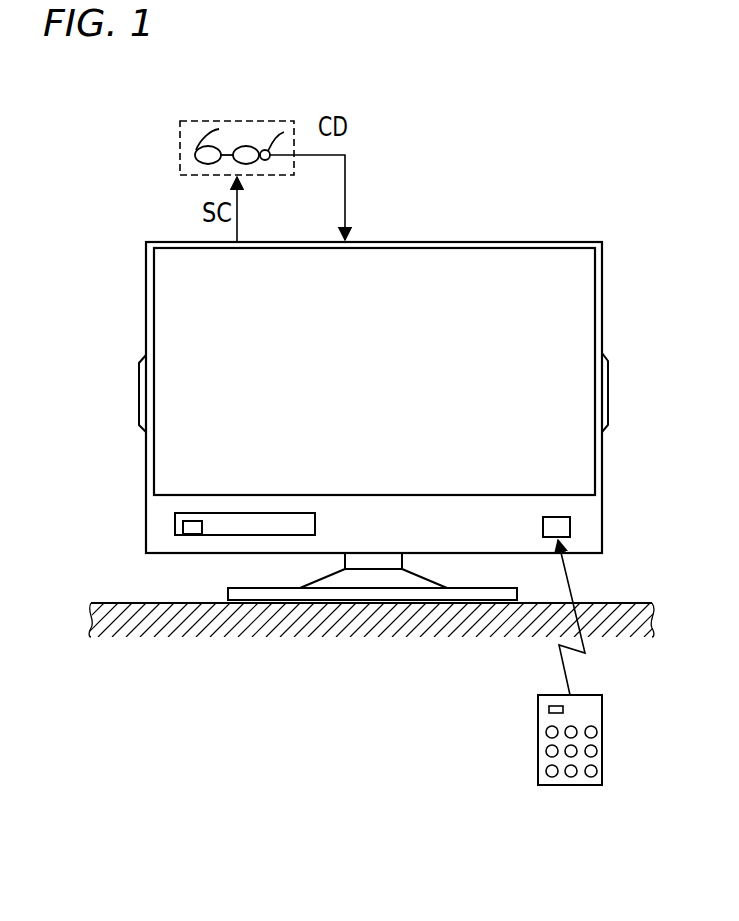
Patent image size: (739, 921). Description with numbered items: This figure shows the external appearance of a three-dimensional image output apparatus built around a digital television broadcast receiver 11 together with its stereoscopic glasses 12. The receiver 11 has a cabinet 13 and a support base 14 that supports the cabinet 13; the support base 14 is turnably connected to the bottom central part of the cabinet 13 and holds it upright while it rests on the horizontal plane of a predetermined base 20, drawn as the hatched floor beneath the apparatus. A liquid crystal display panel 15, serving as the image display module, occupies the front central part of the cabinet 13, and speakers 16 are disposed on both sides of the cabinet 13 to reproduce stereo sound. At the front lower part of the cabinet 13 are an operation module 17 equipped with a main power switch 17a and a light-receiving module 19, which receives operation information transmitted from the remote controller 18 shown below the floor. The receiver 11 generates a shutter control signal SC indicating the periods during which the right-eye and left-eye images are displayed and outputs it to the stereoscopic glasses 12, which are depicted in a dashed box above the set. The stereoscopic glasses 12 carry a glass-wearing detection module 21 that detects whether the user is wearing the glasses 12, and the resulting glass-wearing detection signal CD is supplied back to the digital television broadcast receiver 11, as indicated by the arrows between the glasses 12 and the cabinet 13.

The digital television broadcast receiver 11 is at (570, 240).
The stereoscopic glasses 12 is at (226, 121).
The cabinet 13 is at (602, 297).
The support base 14 is at (477, 574).
The liquid crystal display panel 15 is at (447, 255).
The speaker 16 is at (138, 395).
The operation module 17 is at (315, 521).
The main power switch 17a is at (193, 535).
The remote controller 18 is at (597, 730).
The light-receiving module 19 is at (542, 528).
The base 20 is at (635, 600).
The glass-wearing detection module 21 is at (268, 160).